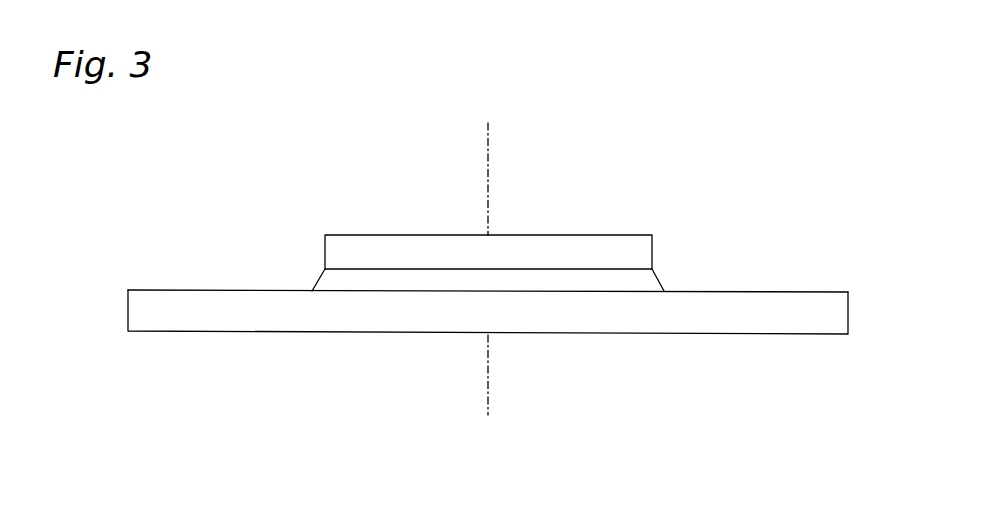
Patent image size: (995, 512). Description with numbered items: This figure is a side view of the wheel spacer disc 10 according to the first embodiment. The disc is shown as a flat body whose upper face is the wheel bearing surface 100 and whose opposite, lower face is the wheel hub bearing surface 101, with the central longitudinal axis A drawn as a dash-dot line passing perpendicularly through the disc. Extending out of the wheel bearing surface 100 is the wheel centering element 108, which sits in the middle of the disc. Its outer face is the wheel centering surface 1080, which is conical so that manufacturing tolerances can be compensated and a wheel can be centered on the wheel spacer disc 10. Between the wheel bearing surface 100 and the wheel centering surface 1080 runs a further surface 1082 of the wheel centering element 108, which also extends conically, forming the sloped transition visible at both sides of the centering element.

The wheel spacer disc 10 is at (488, 239).
The wheel bearing surface 100 is at (156, 283).
The wheel hub bearing surface 101 is at (160, 340).
The wheel centering element 108 is at (563, 217).
The wheel centering surface 1080 is at (517, 250).
The surface of the wheel centering element 1082 is at (652, 283).